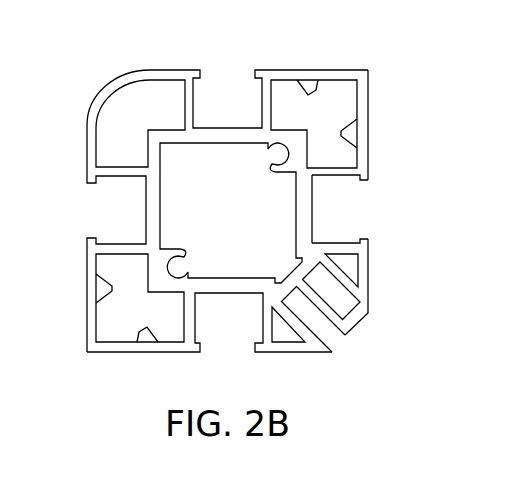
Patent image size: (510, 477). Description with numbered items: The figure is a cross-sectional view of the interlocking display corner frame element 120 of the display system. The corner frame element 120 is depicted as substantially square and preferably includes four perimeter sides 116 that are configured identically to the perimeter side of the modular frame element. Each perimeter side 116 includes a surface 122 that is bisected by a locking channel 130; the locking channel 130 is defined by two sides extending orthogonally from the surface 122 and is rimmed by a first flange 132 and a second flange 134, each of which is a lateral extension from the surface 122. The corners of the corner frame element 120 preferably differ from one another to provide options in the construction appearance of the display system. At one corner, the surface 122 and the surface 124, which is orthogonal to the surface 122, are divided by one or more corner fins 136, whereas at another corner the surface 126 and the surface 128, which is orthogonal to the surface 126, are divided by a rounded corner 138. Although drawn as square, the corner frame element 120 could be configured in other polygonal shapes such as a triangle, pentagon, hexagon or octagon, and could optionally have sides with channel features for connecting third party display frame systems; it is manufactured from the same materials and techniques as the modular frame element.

The corner frame element 120 is at (228, 203).
The perimeter side 116 is at (85, 152).
The rounded corner 138 is at (120, 77).
The surface 128 is at (315, 70).
The second flange 134 is at (368, 180).
The locking channel 130 is at (371, 206).
The first flange 132 is at (368, 240).
The surface 122 is at (370, 282).
The corner fin 136 is at (350, 333).
The surface 124 is at (295, 352).
The surface 126 is at (87, 279).